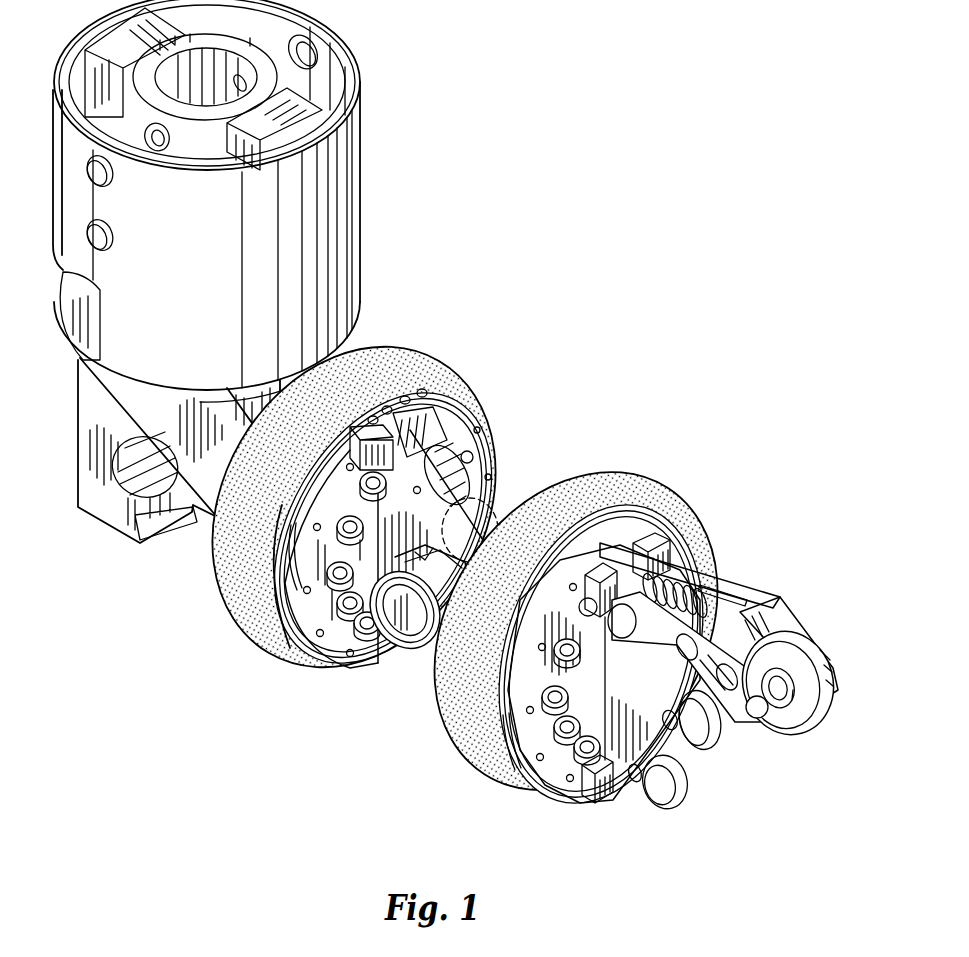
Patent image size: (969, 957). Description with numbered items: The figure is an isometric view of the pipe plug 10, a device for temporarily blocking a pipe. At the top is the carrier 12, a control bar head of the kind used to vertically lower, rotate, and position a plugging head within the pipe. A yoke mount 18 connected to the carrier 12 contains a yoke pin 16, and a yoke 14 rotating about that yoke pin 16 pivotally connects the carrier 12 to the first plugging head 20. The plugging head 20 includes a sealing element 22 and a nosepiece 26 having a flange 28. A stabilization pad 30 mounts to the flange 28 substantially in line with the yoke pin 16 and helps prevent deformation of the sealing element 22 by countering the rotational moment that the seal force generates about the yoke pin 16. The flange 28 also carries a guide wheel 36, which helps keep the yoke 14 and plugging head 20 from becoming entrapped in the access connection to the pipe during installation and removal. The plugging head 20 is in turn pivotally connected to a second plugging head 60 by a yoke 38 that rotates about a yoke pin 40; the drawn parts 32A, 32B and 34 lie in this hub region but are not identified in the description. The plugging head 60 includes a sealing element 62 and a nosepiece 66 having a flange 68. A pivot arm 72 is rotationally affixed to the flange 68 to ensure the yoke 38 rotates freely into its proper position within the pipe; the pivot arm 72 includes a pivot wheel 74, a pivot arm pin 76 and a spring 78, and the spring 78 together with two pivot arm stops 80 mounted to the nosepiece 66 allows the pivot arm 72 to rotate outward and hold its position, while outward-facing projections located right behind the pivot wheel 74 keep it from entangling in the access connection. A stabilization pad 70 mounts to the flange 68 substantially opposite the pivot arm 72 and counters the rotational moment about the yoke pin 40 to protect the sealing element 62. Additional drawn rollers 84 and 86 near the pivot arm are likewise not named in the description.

The pipe plug 10 is at (449, 435).
The carrier 12 is at (362, 147).
The yoke 14 is at (167, 407).
The yoke pin 16 is at (92, 318).
The yoke mount 18 is at (93, 503).
The plugging head 20 is at (354, 492).
The sealing element 22 is at (412, 367).
The nosepiece 26 is at (288, 655).
The flange 28 is at (470, 500).
The stabilization pad 30 is at (432, 405).
The axle first end 32A is at (430, 603).
The axle second end 32B is at (497, 520).
The axle housing 34 is at (427, 653).
The guide wheel 36 is at (447, 453).
The yoke 38 is at (440, 560).
The yoke pin 40 is at (375, 632).
The plugging head 60 is at (611, 645).
The sealing element 62 is at (617, 470).
The nosepiece 66 is at (520, 783).
The flange 68 is at (630, 737).
The stabilization pad 70 is at (587, 800).
The pivot arm 72 is at (782, 598).
The pivot wheel 74 is at (800, 733).
The pivot arm pin 76 is at (617, 630).
The spring 78 is at (713, 563).
The pivot arm stops 80 is at (593, 570).
The roller 84 is at (710, 737).
The roller 86 is at (663, 803).